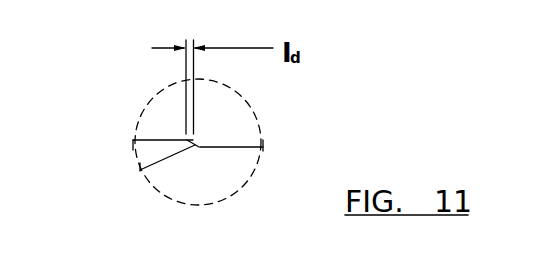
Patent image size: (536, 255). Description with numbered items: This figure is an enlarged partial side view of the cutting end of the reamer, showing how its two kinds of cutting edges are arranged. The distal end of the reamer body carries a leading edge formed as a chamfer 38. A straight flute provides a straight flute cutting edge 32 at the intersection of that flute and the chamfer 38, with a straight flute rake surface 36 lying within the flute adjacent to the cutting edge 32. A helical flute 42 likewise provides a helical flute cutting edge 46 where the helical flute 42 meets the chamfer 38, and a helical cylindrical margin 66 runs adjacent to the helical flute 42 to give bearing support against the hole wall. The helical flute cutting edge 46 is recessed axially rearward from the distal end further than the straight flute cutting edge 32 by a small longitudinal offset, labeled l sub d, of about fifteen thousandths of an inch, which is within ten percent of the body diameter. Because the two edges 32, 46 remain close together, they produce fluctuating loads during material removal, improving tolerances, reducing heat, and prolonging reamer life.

The straight flute cutting edge 32 is at (198, 146).
The straight flute rake surface 36 is at (198, 146).
The chamfer 38 is at (197, 143).
The helical flute 42 is at (197, 178).
The helical flute cutting edge 46 is at (188, 145).
The helical cylindrical margin 66 is at (193, 141).